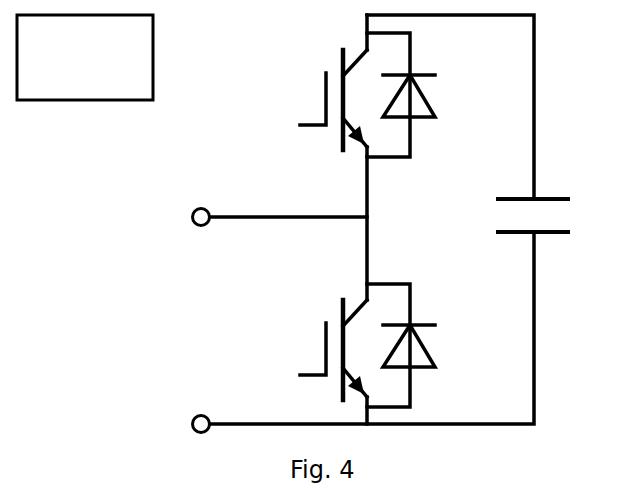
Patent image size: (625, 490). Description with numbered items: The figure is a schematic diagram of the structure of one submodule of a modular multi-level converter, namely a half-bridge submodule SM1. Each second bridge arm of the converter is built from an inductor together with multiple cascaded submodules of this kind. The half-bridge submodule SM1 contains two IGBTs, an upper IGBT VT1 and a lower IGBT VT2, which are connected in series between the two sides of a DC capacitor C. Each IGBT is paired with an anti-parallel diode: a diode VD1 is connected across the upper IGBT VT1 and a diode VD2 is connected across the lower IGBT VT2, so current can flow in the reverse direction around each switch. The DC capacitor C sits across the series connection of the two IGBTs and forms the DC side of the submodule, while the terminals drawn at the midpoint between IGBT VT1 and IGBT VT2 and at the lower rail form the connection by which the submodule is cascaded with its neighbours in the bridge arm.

The half-bridge submodule SM1 is at (207, 168).
The IGBT VT1 is at (315, 100).
The diode VD1 is at (447, 101).
The IGBT VT2 is at (315, 350).
The diode VD2 is at (447, 351).
The DC capacitor C is at (547, 219).